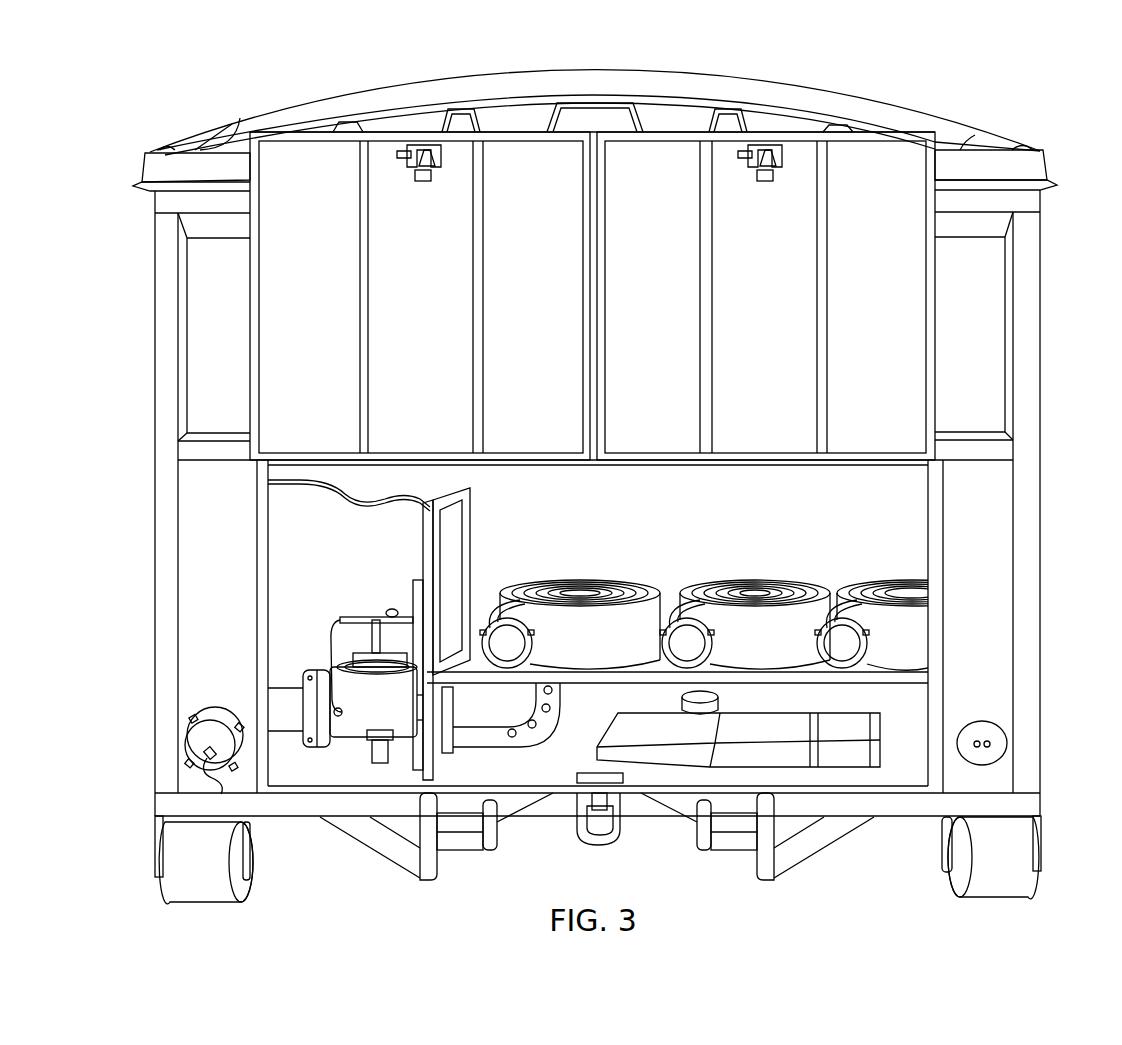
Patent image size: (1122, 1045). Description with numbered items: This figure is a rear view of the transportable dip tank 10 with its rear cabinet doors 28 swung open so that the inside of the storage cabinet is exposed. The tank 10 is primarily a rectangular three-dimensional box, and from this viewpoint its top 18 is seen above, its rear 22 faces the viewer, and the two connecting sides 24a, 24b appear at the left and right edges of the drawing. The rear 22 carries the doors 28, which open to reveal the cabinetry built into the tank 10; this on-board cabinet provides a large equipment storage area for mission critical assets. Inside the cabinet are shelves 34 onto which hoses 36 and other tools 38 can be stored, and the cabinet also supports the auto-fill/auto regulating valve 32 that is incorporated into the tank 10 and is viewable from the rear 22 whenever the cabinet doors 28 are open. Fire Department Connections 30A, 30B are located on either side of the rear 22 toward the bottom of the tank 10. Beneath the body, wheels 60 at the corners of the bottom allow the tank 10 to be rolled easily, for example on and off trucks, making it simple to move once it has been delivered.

The transportable dip tank 10 is at (1068, 150).
The top 18 is at (698, 78).
The rear 22 is at (997, 362).
The connecting side 24a is at (1042, 632).
The connecting side 24b is at (155, 639).
The doors 28 is at (407, 293).
The Fire Department Connection 30A is at (185, 737).
The Fire Department Connection 30B is at (1007, 743).
The auto-fill/auto regulating valve 32 is at (347, 628).
The shelves 34 is at (480, 640).
The hoses 36 is at (585, 625).
The tools 38 is at (852, 723).
The wheels 60 is at (213, 887).